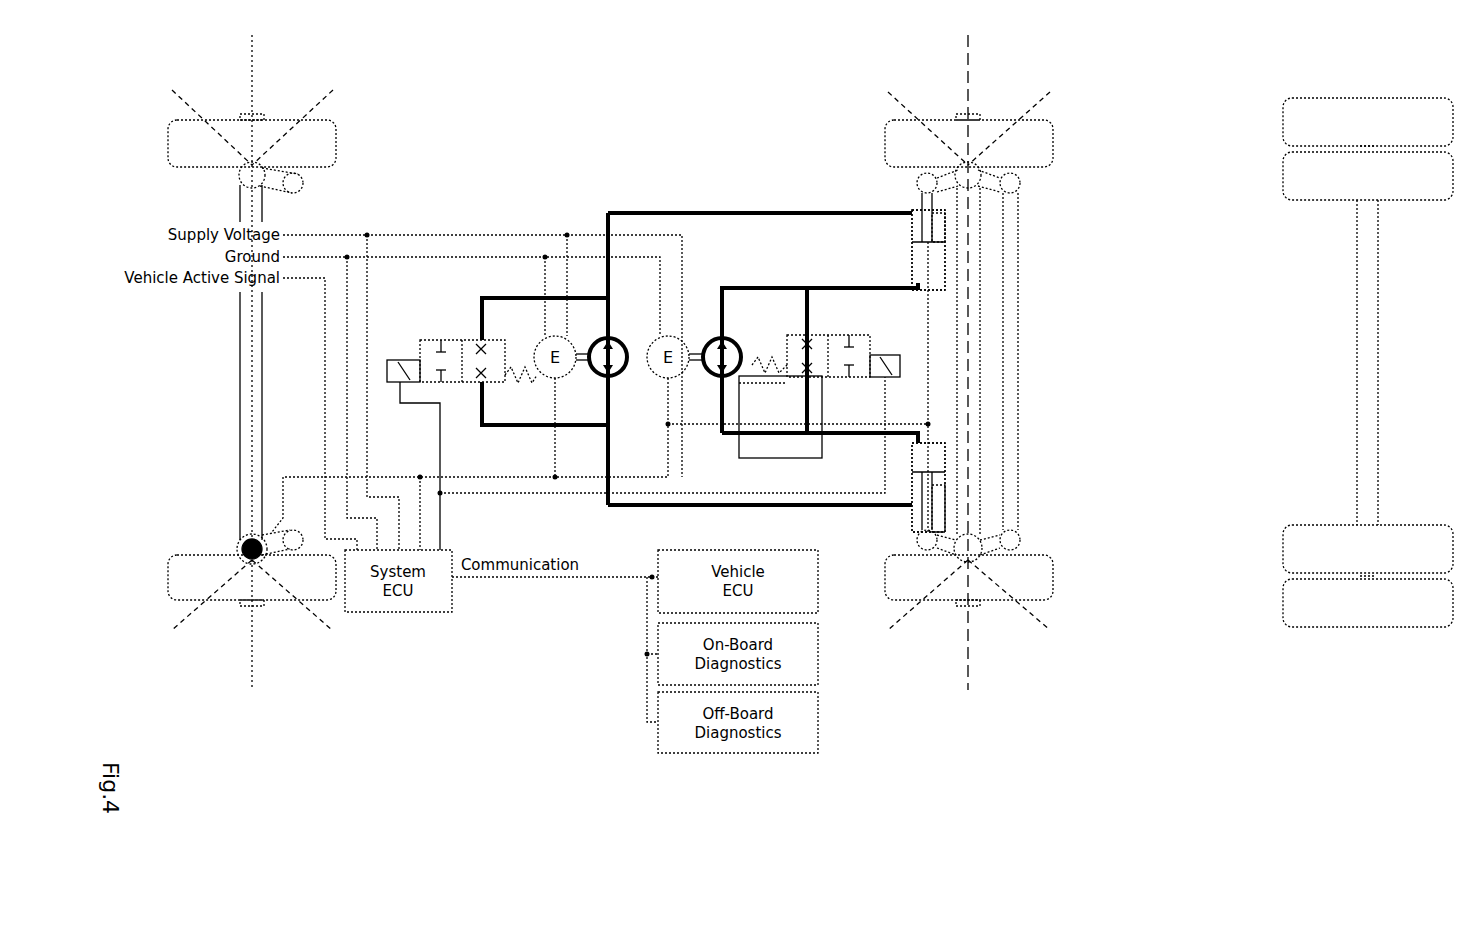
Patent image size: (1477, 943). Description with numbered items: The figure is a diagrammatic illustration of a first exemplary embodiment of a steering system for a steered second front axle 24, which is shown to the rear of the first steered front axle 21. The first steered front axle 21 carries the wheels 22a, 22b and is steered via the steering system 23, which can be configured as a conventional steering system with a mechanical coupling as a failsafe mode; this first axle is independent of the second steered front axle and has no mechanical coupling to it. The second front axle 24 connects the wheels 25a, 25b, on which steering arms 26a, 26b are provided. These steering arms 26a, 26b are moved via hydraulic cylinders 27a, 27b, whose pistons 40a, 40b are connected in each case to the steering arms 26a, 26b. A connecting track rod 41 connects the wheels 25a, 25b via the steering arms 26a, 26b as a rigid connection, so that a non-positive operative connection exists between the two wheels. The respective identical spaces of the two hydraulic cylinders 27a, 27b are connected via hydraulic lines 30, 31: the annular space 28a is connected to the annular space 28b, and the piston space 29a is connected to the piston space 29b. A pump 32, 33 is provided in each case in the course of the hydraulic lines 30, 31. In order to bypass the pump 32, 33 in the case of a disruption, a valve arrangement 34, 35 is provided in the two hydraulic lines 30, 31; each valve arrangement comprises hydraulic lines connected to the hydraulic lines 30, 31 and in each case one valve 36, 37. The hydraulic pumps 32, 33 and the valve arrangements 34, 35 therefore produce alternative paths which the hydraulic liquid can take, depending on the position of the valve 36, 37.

The first steered front axle 21 is at (262, 392).
The wheel 22a is at (230, 125).
The wheel 22b is at (280, 595).
The steering system 23 is at (240, 558).
The second front axle 24 is at (1028, 404).
The wheel 25a is at (985, 130).
The wheel 25b is at (1035, 573).
The steering arm 26a is at (945, 195).
The steering arm 26b is at (935, 546).
The hydraulic cylinder 27a is at (903, 227).
The hydraulic cylinder 27b is at (905, 493).
The annular space 28a is at (955, 290).
The annular space 28b is at (940, 445).
The piston space 29a is at (938, 228).
The piston space 29b is at (940, 490).
The hydraulic line 30 is at (697, 214).
The hydraulic line 31 is at (838, 287).
The pump 32 is at (620, 350).
The pump 33 is at (740, 348).
The valve arrangement 34 is at (432, 337).
The valve arrangement 35 is at (843, 334).
The valve 36 is at (490, 366).
The valve 37 is at (800, 372).
The piston 40a is at (930, 205).
The piston 40b is at (930, 515).
The connecting track rod 41 is at (1010, 375).